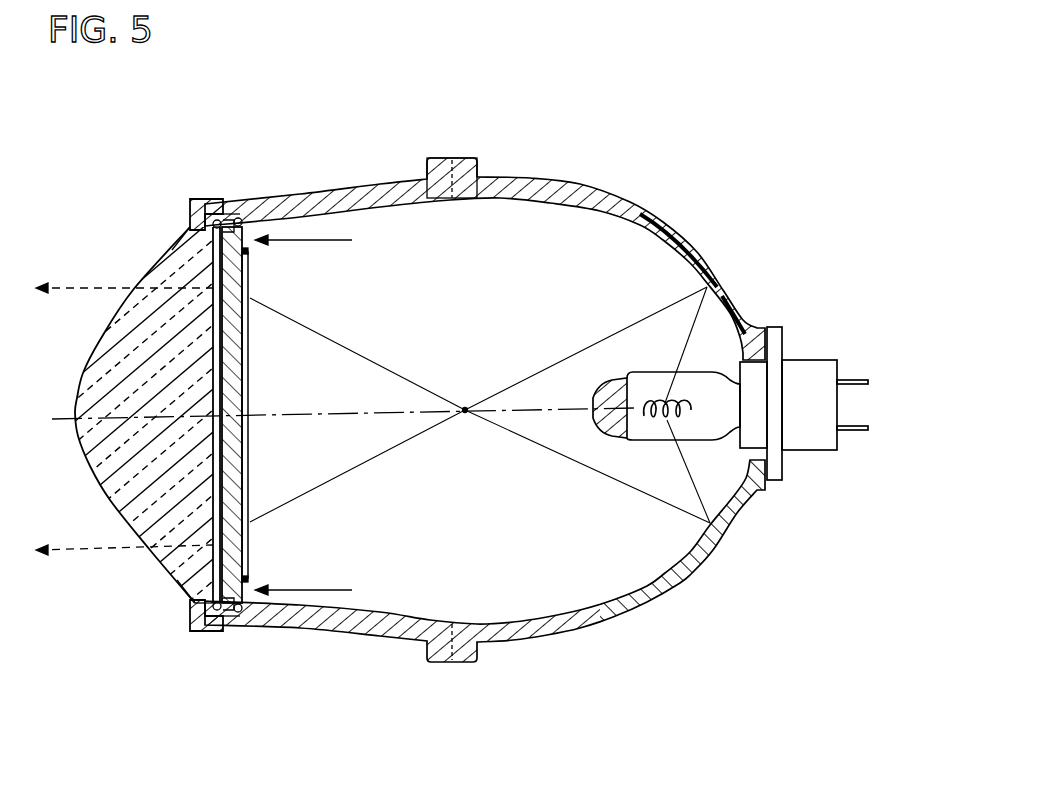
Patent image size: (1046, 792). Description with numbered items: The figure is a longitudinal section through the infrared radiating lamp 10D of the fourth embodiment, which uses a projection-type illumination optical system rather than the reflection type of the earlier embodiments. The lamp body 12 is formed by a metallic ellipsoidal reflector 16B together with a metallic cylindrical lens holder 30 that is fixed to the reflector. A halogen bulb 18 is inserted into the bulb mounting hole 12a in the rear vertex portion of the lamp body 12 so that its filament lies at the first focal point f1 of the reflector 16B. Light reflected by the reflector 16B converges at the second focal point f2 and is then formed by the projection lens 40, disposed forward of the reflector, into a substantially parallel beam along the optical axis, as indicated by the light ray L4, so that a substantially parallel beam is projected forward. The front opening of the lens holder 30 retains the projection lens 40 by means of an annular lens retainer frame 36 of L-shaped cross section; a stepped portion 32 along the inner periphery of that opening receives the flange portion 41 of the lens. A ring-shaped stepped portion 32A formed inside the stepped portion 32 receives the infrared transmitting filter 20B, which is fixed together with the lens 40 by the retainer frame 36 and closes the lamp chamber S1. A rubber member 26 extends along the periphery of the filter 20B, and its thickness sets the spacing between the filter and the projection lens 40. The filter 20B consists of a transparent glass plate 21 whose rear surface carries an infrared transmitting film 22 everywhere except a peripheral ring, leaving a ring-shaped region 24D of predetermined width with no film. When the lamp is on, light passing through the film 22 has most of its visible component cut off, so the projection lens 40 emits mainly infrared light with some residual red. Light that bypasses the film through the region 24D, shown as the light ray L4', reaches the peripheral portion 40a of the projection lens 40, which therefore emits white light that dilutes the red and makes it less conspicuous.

The infrared radiating lamp 10D is at (118, 260).
The lamp body 12 is at (610, 194).
The lens holder 30 is at (392, 182).
The bulb mounting hole 12a is at (760, 447).
The ellipsoidal reflector 16B is at (672, 258).
The halogen bulb 18 is at (686, 479).
The infrared transmitting filter 20B is at (345, 415).
The transparent glass plate 21 is at (250, 290).
The infrared transmitting film 22 is at (250, 377).
The ring-shaped region having no infrared transmitting film 24D is at (245, 222).
The rubber member 26 is at (238, 220).
The stepped portion 32 is at (224, 205).
The ring-shaped stepped portion 32A is at (252, 224).
The lens retainer frame 36 is at (203, 198).
The projection lens 40 is at (90, 378).
The peripheral portion of the projection lens 40a is at (185, 240).
The flange portion 41 is at (193, 633).
The first focal point f1 is at (684, 408).
The second focal point f2 is at (343, 430).
The lamp chamber S1 is at (470, 548).
The light ray through the infrared transmitting film L4 is at (123, 405).
The light ray through the region having no infrared transmitting film L4' is at (303, 415).